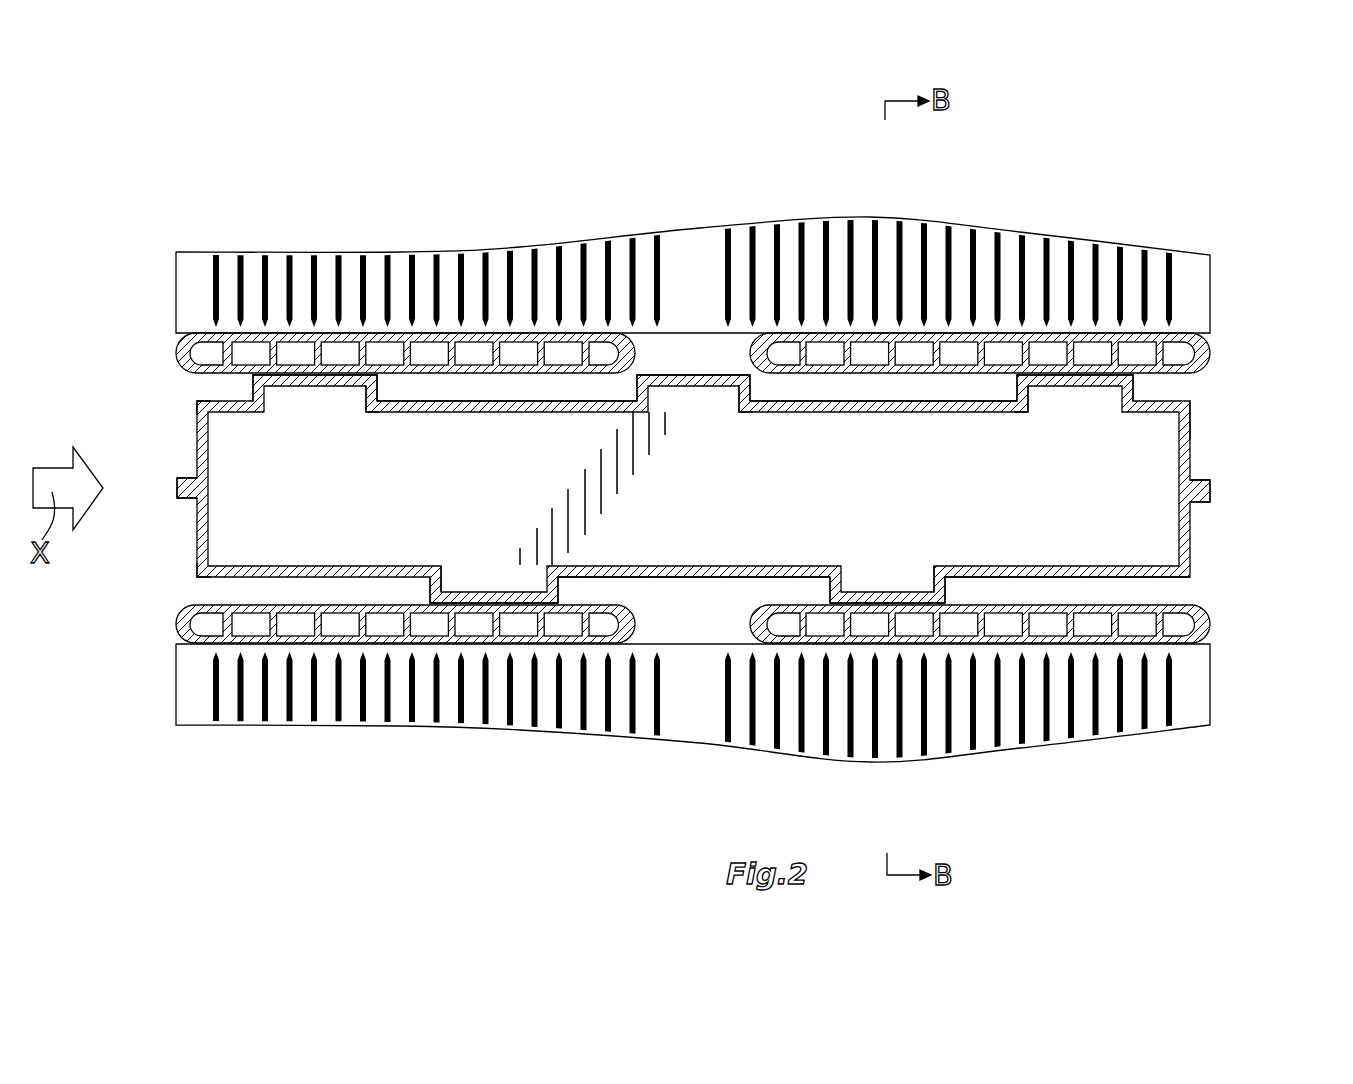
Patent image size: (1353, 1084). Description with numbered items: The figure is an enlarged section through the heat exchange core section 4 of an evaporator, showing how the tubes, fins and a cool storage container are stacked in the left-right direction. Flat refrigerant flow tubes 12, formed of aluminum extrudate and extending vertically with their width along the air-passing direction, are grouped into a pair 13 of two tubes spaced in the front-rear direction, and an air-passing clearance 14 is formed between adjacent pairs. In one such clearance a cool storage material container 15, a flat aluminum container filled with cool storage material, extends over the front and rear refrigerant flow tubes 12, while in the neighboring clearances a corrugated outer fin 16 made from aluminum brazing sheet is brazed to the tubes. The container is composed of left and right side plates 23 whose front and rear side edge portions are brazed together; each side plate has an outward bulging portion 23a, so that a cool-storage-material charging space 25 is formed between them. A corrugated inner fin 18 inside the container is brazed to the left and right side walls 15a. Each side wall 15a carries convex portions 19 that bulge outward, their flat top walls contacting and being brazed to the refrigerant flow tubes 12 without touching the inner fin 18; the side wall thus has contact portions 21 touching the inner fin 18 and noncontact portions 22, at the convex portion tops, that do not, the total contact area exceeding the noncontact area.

The heat exchange core section 4 is at (764, 489).
The refrigerant flow tube 12 is at (734, 489).
The pair of refrigerant flow tubes 13 is at (1212, 355).
The air-passing clearance 14 is at (764, 489).
The cool storage material container 15 is at (706, 487).
The side wall 15a is at (600, 409).
The outer fin 16 is at (703, 265).
The inner fin 18 is at (230, 523).
The convex portion 19 is at (372, 403).
The contact portion 21 is at (479, 400).
The noncontact portion 22 is at (347, 378).
The side plate 23 is at (178, 490).
The outward bulging portion 23a is at (195, 405).
The cool-storage-material charging space 25 is at (1195, 412).